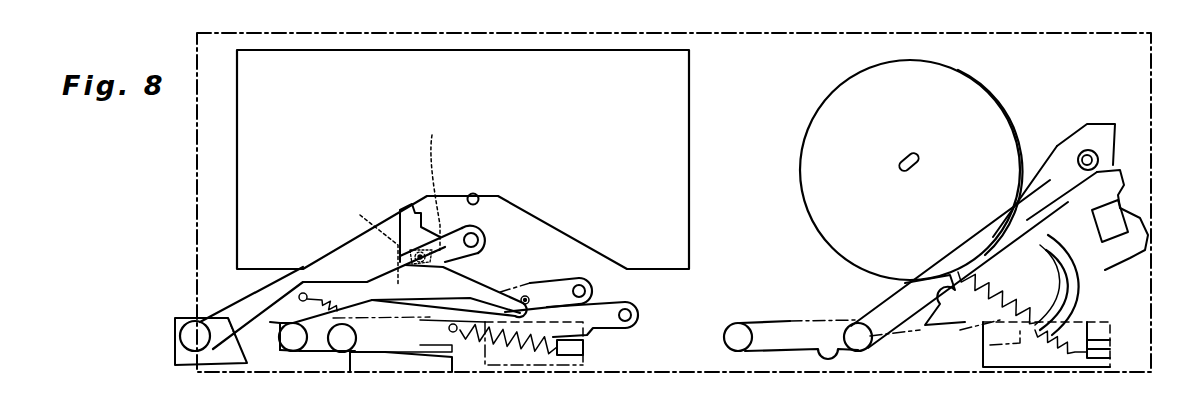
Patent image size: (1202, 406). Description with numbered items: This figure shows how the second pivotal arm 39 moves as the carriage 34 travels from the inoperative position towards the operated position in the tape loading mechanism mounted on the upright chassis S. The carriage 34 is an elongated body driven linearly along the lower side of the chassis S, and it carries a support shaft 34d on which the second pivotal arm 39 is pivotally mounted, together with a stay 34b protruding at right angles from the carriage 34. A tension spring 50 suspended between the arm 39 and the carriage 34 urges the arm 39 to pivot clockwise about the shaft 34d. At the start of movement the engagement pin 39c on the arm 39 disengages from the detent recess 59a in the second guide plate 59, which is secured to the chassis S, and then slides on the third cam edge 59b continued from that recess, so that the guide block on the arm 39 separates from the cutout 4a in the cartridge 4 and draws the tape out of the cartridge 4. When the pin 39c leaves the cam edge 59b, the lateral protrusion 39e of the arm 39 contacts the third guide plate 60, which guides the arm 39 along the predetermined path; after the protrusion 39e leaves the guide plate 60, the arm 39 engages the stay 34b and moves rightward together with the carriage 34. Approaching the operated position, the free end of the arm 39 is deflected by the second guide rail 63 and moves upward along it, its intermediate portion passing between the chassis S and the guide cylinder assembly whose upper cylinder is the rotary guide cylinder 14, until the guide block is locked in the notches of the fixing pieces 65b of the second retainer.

The upright chassis S is at (1154, 74).
The cartridge 4 is at (237, 133).
The cutout 4a is at (474, 193).
The upper or rotary guide cylinder 14 is at (826, 116).
The carriage 34 is at (224, 365).
The stay 34b is at (573, 347).
The support shaft 34d is at (188, 334).
The second pivotal arm 39 is at (246, 306).
The engagement pin 39c is at (374, 239).
The lateral protrusion 39e is at (428, 355).
The tension spring 50 is at (320, 297).
The second guide plate 59 is at (418, 207).
The detent recess 59a is at (429, 183).
The third cam edge 59b is at (484, 282).
The third guide plate 60 is at (383, 362).
The second guide rail 63 is at (1084, 292).
The fixing piece 65b is at (1097, 122).